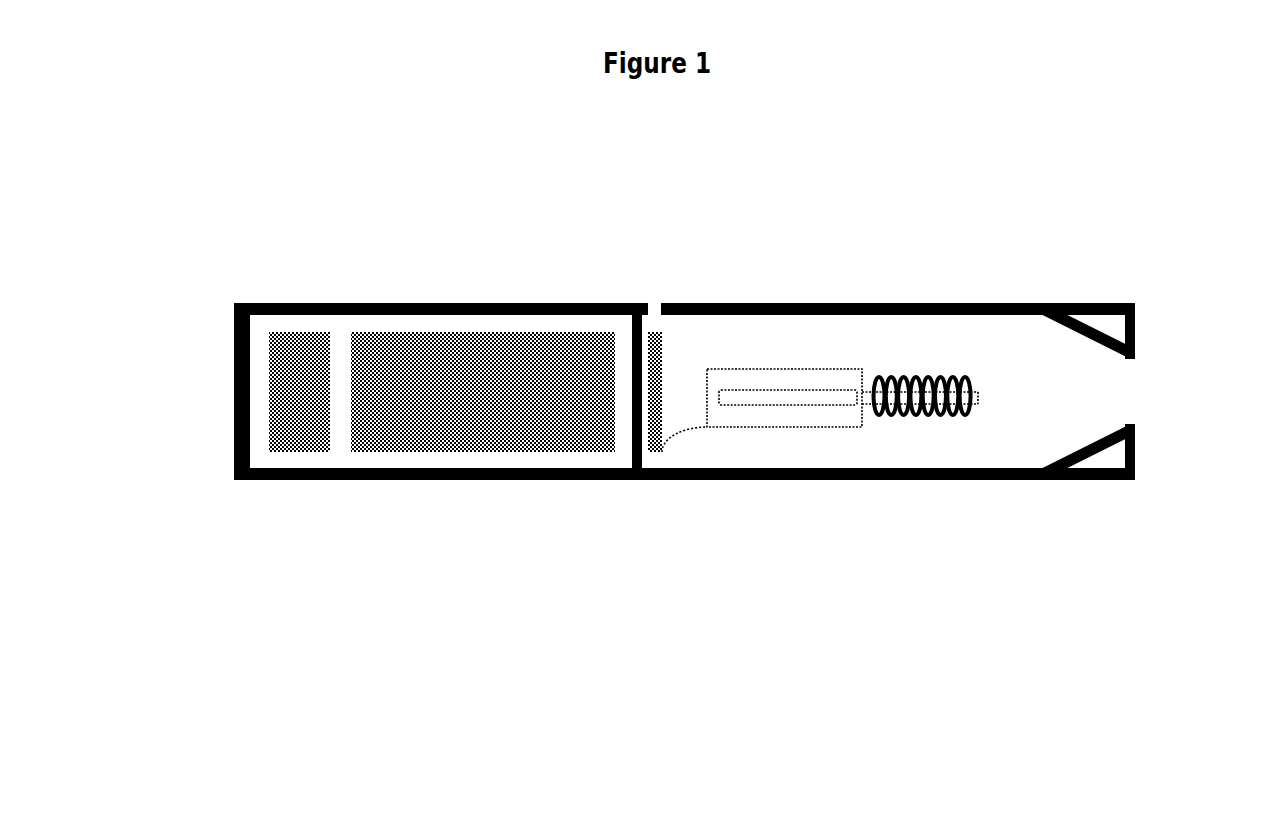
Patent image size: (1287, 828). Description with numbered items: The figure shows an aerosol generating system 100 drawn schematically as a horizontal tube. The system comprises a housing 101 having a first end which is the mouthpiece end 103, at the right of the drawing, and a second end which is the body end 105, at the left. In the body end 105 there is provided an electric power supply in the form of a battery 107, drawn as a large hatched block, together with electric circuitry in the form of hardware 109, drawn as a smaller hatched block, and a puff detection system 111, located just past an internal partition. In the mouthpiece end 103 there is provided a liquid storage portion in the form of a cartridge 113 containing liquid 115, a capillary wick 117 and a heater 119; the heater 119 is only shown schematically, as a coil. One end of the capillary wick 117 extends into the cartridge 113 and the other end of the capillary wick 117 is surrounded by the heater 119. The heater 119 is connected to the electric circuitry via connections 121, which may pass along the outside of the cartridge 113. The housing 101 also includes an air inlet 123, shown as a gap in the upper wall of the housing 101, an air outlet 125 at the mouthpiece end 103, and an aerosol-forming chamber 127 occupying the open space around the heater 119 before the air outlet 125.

The system 100 is at (199, 297).
The housing 101 is at (434, 303).
The mouthpiece end 103 is at (1097, 549).
The body end 105 is at (366, 548).
The battery 107 is at (483, 428).
The hardware 109 is at (294, 428).
The puff detection system 111 is at (674, 356).
The cartridge 113 is at (790, 428).
The liquid 115 is at (778, 377).
The capillary wick 117 is at (975, 398).
The heater 119 is at (918, 428).
The connections 121 is at (697, 450).
The air inlet 123 is at (651, 295).
The air outlet 125 is at (1147, 392).
The aerosol-forming chamber 127 is at (952, 345).